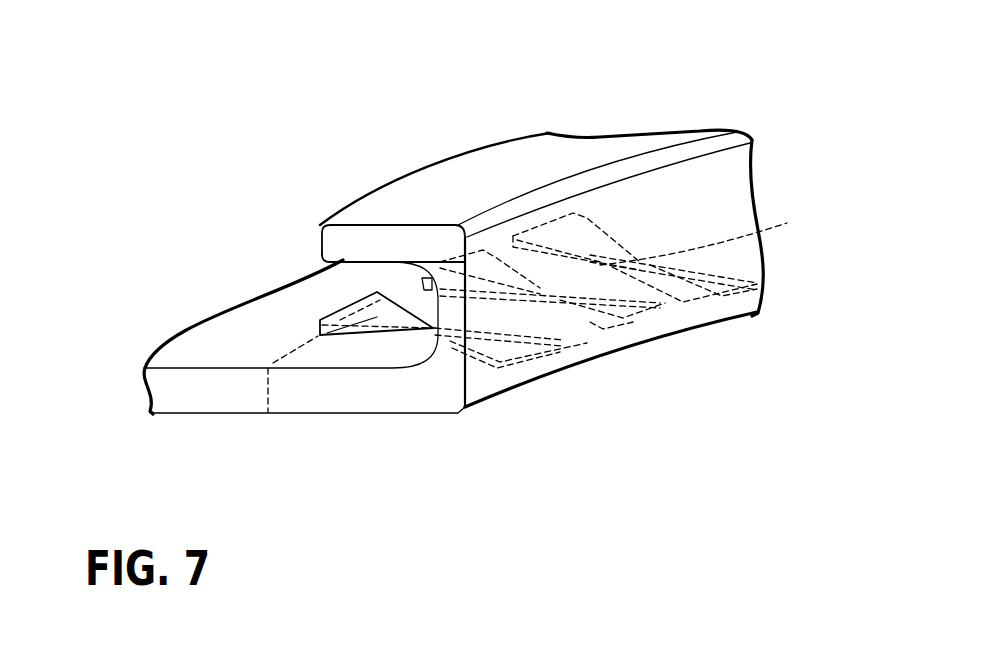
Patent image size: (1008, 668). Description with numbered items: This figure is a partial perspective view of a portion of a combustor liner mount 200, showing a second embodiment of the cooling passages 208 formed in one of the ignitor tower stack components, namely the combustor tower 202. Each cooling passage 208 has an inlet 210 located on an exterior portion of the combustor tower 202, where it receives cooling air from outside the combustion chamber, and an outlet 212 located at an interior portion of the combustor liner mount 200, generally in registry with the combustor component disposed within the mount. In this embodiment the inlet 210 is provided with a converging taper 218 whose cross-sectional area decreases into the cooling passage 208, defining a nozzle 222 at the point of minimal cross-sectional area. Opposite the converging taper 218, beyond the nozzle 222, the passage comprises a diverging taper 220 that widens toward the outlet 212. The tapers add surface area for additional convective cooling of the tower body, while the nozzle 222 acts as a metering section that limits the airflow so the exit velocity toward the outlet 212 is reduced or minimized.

The combustor liner mount 200 is at (247, 260).
The combustor tower 202 is at (315, 395).
The cooling passage 208 is at (393, 300).
The inlet 210 is at (327, 315).
The outlet 212 is at (760, 290).
The converging taper 218 is at (377, 317).
The diverging taper 220 is at (735, 316).
The nozzle 222 is at (753, 227).